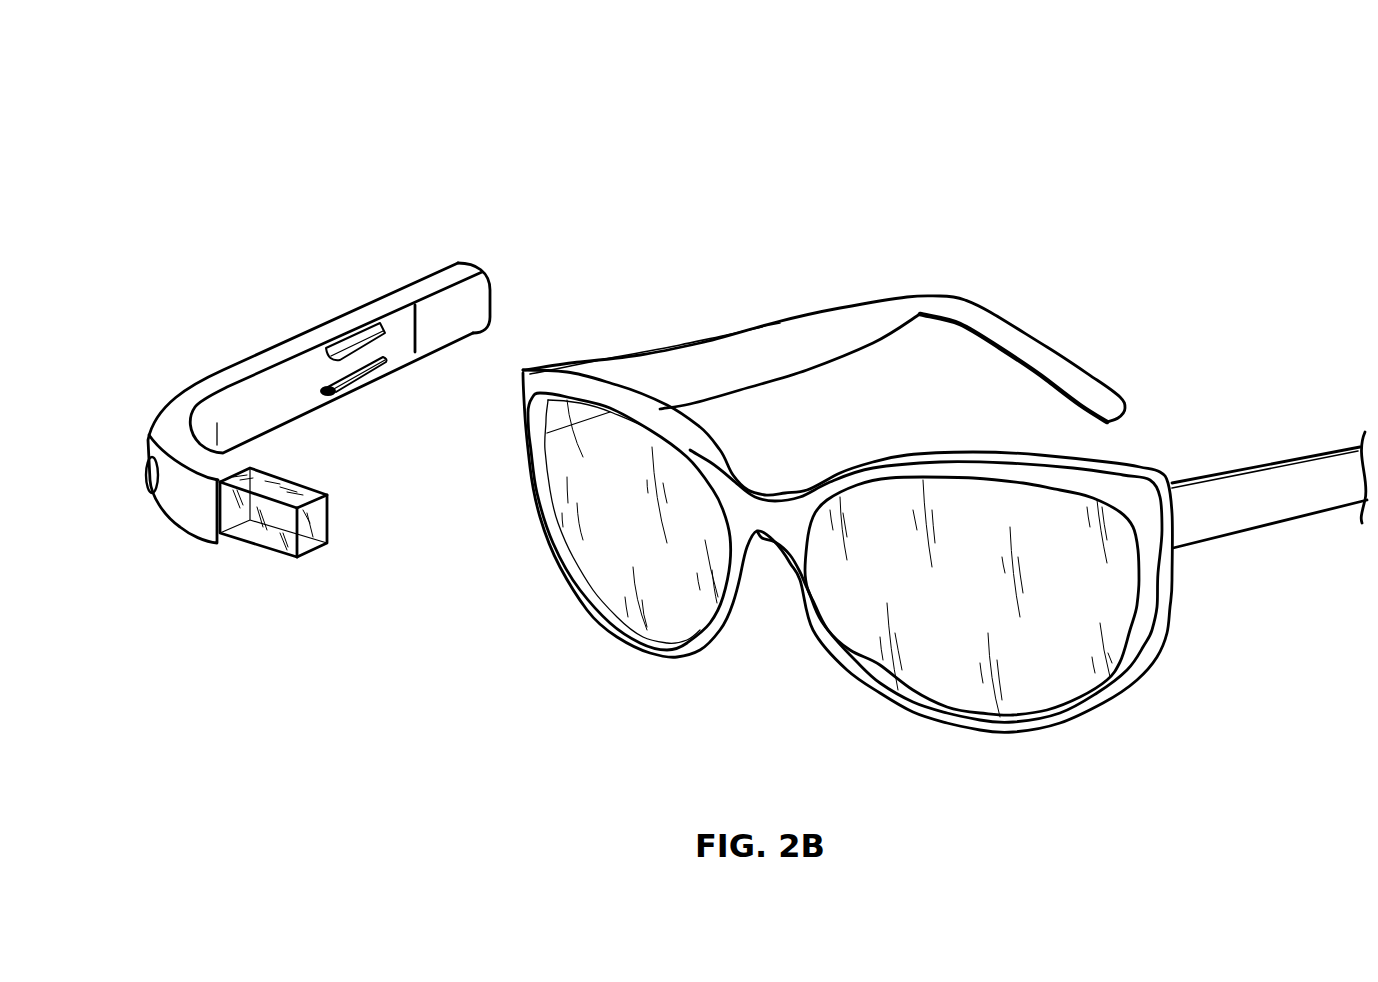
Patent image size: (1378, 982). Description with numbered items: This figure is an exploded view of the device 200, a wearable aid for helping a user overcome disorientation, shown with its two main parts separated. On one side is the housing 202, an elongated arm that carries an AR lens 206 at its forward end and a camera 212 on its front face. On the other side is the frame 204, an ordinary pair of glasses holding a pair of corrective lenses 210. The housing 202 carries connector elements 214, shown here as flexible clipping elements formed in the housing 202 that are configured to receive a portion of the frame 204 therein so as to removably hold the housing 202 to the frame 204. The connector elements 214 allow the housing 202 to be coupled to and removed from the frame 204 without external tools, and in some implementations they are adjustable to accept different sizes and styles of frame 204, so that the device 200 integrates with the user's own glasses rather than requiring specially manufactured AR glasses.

The device 200 is at (1162, 109).
The housing 202 is at (467, 293).
The frame 204 is at (773, 343).
The AR lens 206 is at (272, 540).
The corrective lenses 210 is at (633, 622).
The camera 212 is at (147, 478).
The connector elements 214 is at (368, 338).